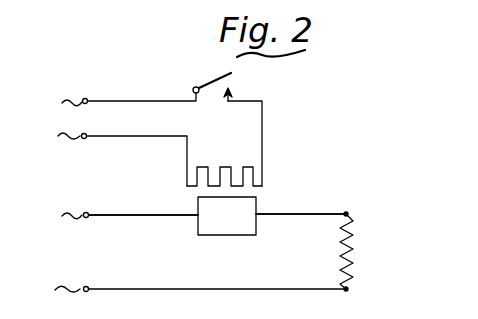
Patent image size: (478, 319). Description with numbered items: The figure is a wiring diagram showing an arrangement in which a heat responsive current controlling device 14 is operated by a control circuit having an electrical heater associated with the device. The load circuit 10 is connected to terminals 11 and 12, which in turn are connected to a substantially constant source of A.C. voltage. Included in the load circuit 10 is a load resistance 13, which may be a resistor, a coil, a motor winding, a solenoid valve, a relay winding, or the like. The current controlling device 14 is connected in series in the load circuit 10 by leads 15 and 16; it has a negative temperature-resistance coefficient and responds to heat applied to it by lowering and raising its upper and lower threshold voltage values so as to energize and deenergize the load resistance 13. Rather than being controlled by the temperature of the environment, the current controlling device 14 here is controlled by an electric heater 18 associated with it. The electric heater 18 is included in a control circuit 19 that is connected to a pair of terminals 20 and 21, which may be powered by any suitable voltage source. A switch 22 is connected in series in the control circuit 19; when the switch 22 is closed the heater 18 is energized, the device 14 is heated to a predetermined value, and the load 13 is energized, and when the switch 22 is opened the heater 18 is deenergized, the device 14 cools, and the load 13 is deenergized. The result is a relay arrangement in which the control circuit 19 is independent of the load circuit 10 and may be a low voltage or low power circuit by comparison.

The load circuit 10 is at (308, 213).
The terminal 11 is at (121, 218).
The terminal 12 is at (187, 291).
The load resistance 13 is at (352, 243).
The heat responsive current controlling device 14 is at (245, 206).
The lead 15 is at (190, 214).
The lead 16 is at (256, 217).
The electric heater 18 is at (228, 165).
The control circuit 19 is at (265, 118).
The terminal 20 is at (113, 105).
The terminal 21 is at (108, 156).
The switch 22 is at (211, 83).